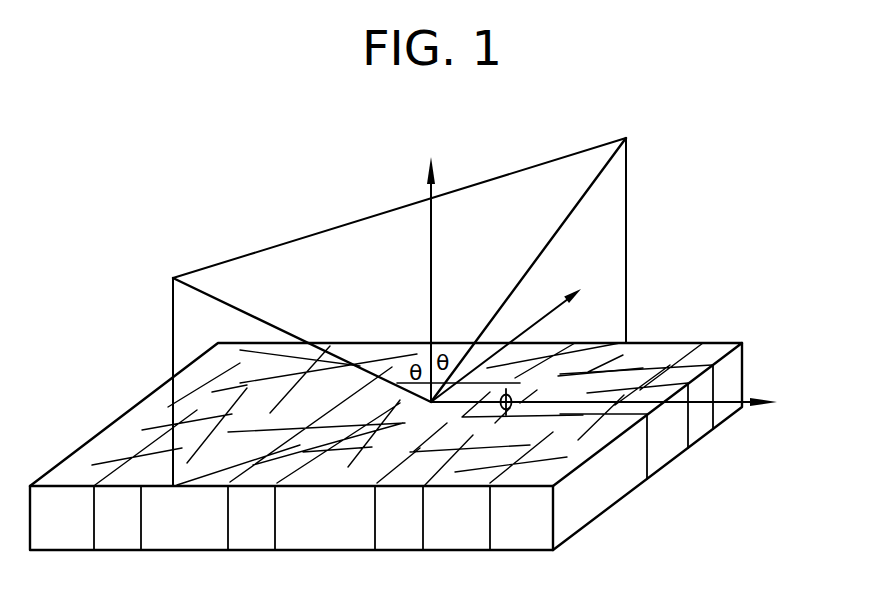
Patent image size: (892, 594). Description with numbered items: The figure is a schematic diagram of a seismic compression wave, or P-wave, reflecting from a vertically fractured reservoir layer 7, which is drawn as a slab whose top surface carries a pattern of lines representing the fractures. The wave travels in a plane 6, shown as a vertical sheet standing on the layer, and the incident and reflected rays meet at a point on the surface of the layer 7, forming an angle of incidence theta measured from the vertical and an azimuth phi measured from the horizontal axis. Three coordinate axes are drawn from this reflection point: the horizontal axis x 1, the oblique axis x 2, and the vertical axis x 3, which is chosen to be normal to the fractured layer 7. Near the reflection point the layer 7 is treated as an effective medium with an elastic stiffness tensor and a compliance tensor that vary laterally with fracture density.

The plane 6 is at (628, 197).
The vertically fractured reservoir layer 7 is at (742, 373).
The x1 coordinate axis 1 is at (604, 419).
The x2 coordinate axis 2 is at (512, 329).
The x3 coordinate axis 3 is at (414, 275).